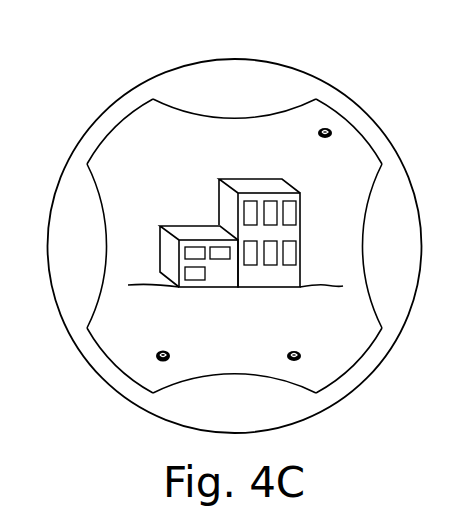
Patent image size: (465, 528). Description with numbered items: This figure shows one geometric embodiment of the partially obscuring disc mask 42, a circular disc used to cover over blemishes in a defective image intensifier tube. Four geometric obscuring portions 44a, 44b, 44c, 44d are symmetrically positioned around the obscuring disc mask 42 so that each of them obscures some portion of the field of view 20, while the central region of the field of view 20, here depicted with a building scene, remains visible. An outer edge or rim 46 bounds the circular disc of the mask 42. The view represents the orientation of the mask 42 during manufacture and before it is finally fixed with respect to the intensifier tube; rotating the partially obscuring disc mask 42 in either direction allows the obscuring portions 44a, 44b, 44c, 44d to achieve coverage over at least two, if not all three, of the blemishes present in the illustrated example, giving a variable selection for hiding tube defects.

The partially obscuring disc mask 42 is at (108, 72).
The outer housing ring 46 is at (97, 373).
The geometric obscuring portion 44a is at (245, 95).
The geometric obscuring portion 44b is at (247, 409).
The geometric obscuring portion 44c is at (88, 256).
The geometric obscuring portion 44d is at (406, 253).
The field of view 20 is at (164, 170).